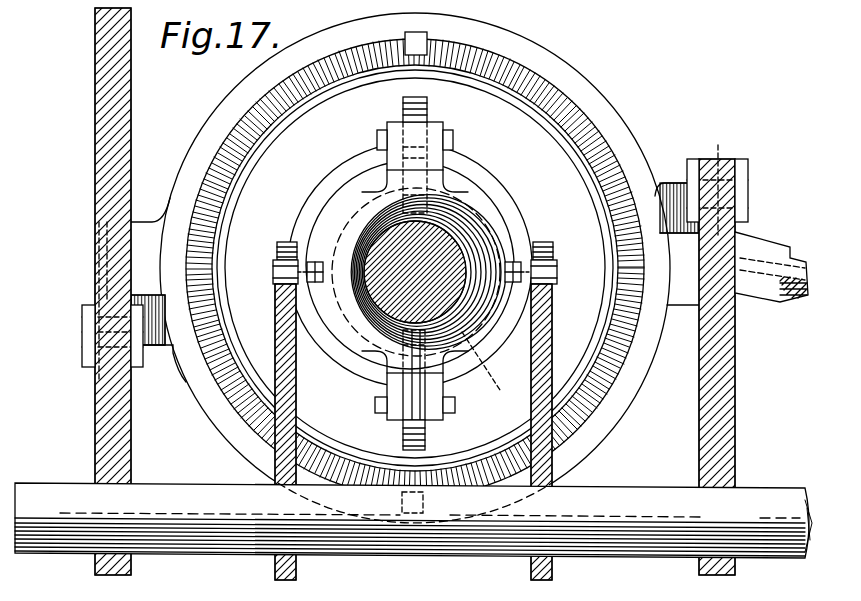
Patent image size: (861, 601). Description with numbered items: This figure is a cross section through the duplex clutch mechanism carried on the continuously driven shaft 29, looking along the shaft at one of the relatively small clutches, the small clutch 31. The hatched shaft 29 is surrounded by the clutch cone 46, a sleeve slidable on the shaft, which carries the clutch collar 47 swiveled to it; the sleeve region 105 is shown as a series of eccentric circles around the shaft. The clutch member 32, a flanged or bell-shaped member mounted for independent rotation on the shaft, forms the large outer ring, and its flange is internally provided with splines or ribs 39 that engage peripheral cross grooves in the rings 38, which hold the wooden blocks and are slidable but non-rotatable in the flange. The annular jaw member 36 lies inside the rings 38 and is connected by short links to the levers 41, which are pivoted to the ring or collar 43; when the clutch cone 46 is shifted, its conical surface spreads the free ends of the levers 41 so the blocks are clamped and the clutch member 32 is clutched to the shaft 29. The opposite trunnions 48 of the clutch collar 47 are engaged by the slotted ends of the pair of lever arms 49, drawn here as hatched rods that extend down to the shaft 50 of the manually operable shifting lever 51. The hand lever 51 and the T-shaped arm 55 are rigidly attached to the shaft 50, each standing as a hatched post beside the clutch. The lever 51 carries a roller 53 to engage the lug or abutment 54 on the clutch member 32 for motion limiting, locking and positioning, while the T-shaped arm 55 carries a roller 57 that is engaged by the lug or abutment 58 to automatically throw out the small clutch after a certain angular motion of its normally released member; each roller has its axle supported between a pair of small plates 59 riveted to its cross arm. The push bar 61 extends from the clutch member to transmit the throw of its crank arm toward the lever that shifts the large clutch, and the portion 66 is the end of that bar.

The small clutch 31 is at (213, 106).
The clutch member 32 is at (205, 140).
The rings 38 is at (344, 63).
The annular jaw member 36 is at (222, 380).
The splines or ribs 39 is at (422, 52).
The levers 41 is at (412, 97).
The ring or collar 43 is at (487, 369).
The clutch cone 46 is at (455, 197).
The clutch collar 47 is at (358, 175).
The shaft 29 is at (385, 243).
The bushing 105 is at (468, 232).
The trunnions 48 is at (275, 268).
The lever arms 49 is at (552, 345).
The shaft 50 is at (502, 540).
The shifting lever 51 is at (96, 150).
The roller 53 is at (98, 374).
The lug or abutment 54 is at (98, 277).
The T-shaped arm 55 is at (718, 366).
The roller 57 is at (716, 176).
The lug or abutment 58 is at (690, 292).
The small plates 59 is at (88, 353).
The push bar 61 is at (766, 248).
The knurled knob 66 is at (800, 290).